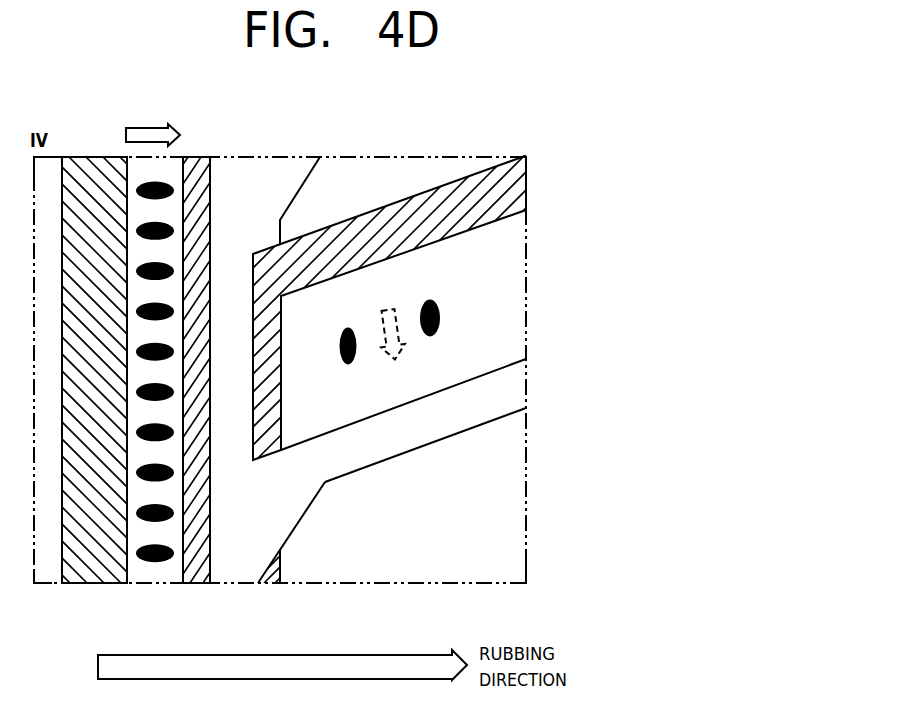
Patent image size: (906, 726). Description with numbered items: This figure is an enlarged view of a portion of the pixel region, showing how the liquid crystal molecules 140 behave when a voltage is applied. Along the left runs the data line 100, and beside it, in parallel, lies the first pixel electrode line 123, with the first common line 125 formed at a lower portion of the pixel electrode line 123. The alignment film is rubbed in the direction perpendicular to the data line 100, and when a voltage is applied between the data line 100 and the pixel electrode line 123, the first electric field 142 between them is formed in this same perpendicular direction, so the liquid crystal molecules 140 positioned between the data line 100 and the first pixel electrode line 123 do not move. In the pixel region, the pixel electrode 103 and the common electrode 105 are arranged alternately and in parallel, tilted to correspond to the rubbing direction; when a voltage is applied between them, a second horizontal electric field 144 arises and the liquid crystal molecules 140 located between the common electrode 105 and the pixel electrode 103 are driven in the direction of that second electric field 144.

The data line 100 is at (96, 583).
The pixel electrode 103 is at (522, 387).
The common electrode 105 is at (522, 179).
The first pixel electrode line 123 is at (238, 578).
The first common line 125 is at (202, 585).
The liquid crystal molecules 140 is at (156, 562).
The first electric field 142 is at (148, 130).
The second horizontal electric field 144 is at (402, 344).